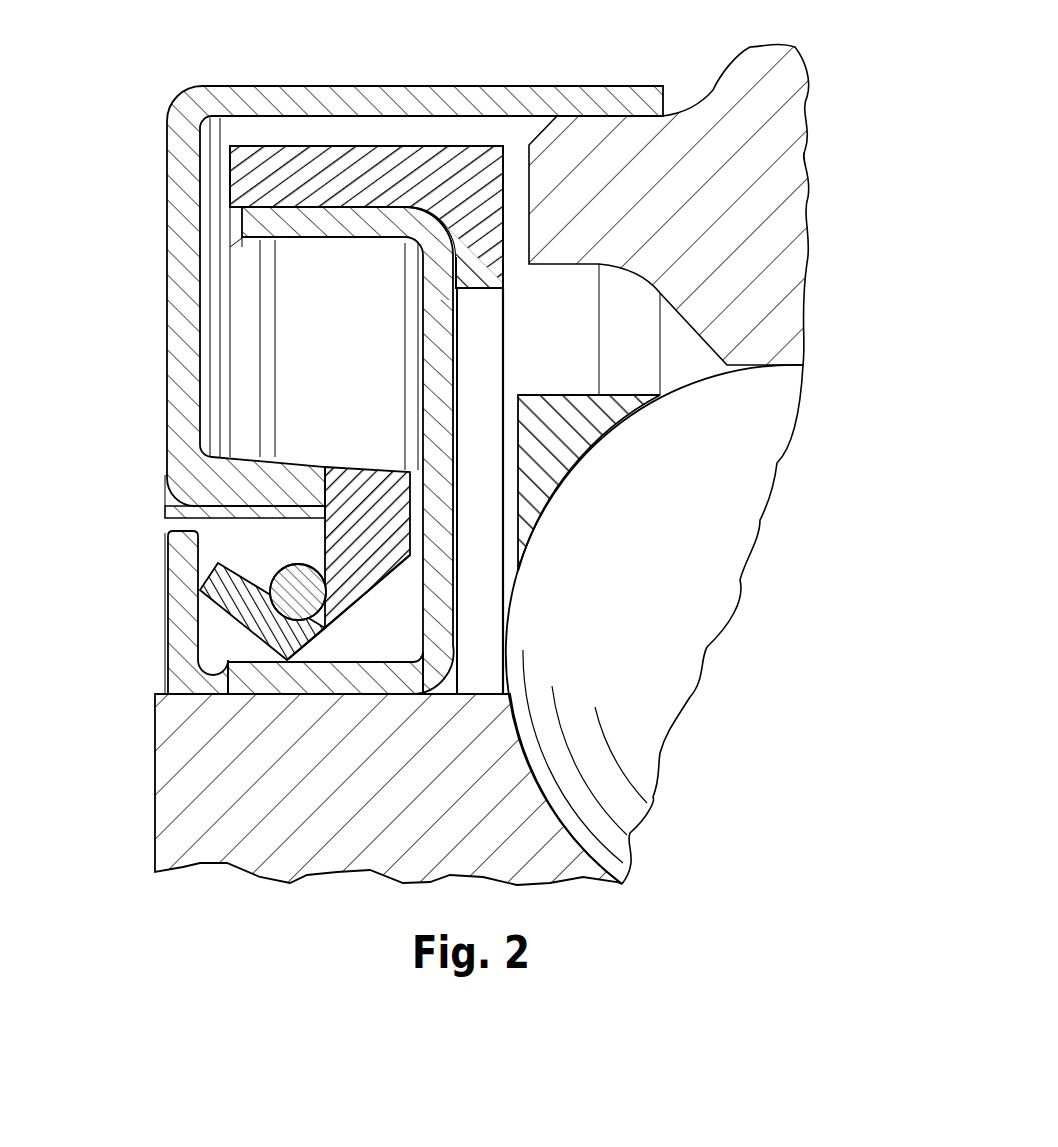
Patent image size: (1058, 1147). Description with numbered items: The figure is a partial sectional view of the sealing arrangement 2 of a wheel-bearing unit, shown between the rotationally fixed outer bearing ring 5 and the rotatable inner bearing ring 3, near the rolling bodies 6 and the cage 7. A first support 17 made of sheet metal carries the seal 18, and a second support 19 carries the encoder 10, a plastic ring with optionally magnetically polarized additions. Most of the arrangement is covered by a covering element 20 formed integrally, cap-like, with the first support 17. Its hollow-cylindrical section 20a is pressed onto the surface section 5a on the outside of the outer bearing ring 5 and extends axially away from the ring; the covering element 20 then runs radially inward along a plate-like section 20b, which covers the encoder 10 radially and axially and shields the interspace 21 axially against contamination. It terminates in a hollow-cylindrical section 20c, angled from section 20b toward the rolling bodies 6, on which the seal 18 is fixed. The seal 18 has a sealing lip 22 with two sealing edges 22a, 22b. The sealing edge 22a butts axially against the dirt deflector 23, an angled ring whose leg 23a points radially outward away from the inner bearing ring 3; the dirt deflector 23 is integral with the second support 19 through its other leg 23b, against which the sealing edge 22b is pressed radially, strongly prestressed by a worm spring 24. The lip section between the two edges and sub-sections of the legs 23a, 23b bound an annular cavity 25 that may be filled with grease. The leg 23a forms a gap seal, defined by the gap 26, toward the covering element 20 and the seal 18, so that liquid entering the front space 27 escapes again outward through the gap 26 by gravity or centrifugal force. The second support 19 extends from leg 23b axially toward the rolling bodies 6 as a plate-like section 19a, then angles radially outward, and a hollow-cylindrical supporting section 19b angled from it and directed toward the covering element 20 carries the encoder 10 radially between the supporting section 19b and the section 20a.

The sealing arrangement 2 is at (334, 343).
The inner bearing ring 3 is at (183, 797).
The outer bearing ring 5 is at (790, 165).
The surface section 5a is at (603, 112).
The rolling bodies 6 is at (740, 567).
The cage 7 is at (580, 453).
The encoder 10 is at (346, 160).
The first support 17 is at (355, 296).
The seal 18 is at (373, 493).
The second support 19 is at (330, 450).
The plate-like section 19a is at (443, 360).
The supporting section 19b is at (260, 222).
The covering element 20 is at (182, 325).
The hollow-cylindrical section 20a is at (463, 95).
The plate-like section 20b is at (183, 275).
The hollow-cylindrical section 20c is at (293, 487).
The interspace 21 is at (640, 350).
The sealing lip 22 is at (268, 653).
The sealing edge 22a is at (190, 590).
The sealing edge 22b is at (297, 655).
The dirt deflector 23 is at (246, 653).
The leg 23a is at (187, 552).
The leg 23b is at (380, 668).
The worm spring 24 is at (300, 600).
The annular cavity 25 is at (217, 640).
The gap 26 is at (185, 519).
The front space 27 is at (257, 550).